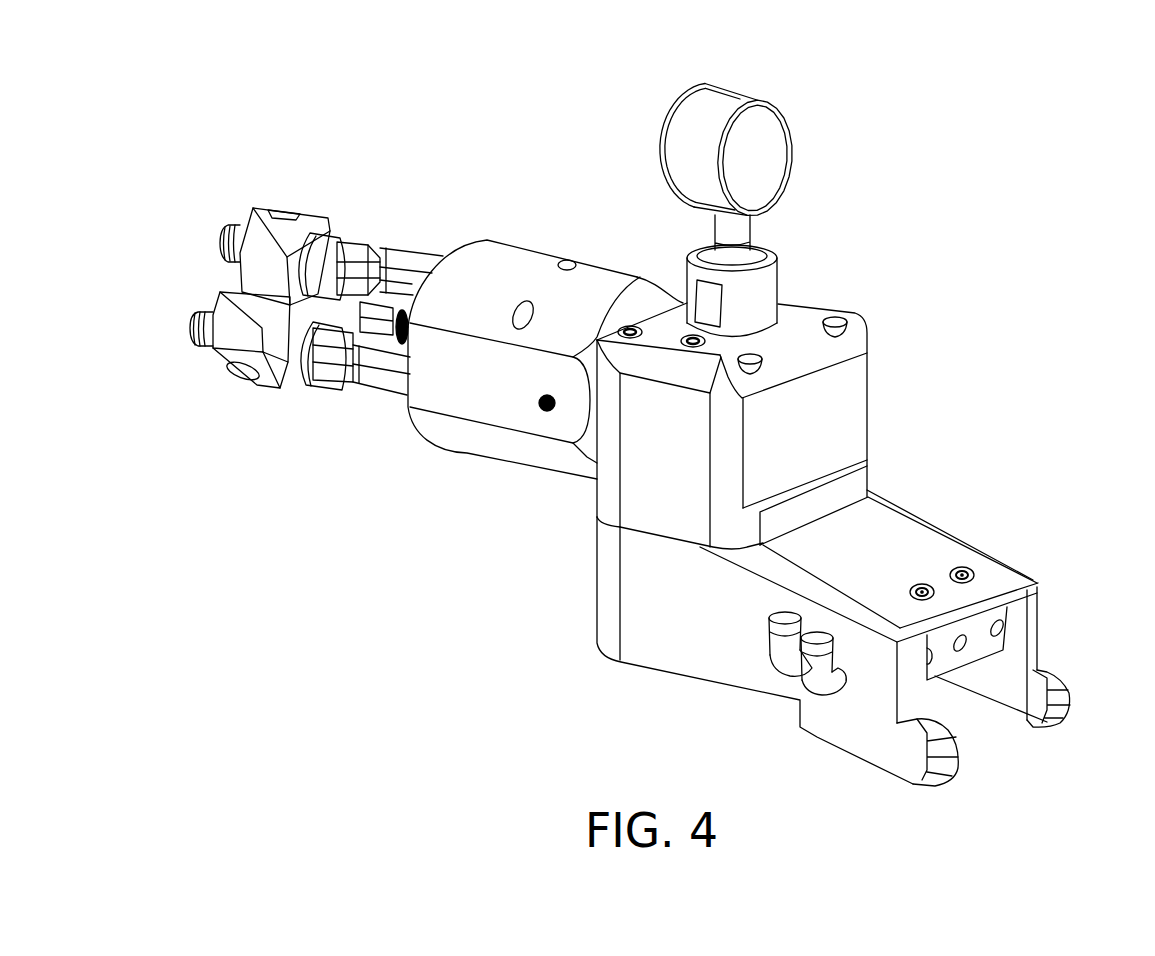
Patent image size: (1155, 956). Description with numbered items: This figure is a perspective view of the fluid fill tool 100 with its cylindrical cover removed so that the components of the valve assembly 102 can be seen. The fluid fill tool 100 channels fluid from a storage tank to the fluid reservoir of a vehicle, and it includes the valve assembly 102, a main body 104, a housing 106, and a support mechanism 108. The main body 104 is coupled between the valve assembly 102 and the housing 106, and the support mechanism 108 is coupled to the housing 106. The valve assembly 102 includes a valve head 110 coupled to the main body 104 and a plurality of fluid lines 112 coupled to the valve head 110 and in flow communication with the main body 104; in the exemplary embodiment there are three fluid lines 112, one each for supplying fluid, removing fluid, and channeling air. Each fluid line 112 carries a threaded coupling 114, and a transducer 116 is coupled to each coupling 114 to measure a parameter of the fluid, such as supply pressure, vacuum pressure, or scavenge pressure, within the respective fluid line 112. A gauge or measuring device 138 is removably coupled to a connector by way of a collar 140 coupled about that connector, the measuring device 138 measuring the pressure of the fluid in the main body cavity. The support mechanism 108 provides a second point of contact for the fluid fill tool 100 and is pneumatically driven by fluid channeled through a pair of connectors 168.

The fluid fill tool 100 is at (275, 132).
The valve assembly 102 is at (382, 497).
The main body 104 is at (850, 397).
The housing 106 is at (627, 620).
The support mechanism 108 is at (997, 612).
The valve head 110 is at (510, 267).
The fluid lines 112 is at (400, 262).
The threaded couplings 114 is at (267, 230).
The transducer 116 is at (262, 387).
The measuring device 138 is at (767, 140).
The collar 140 is at (767, 293).
The connectors 168 is at (783, 660).